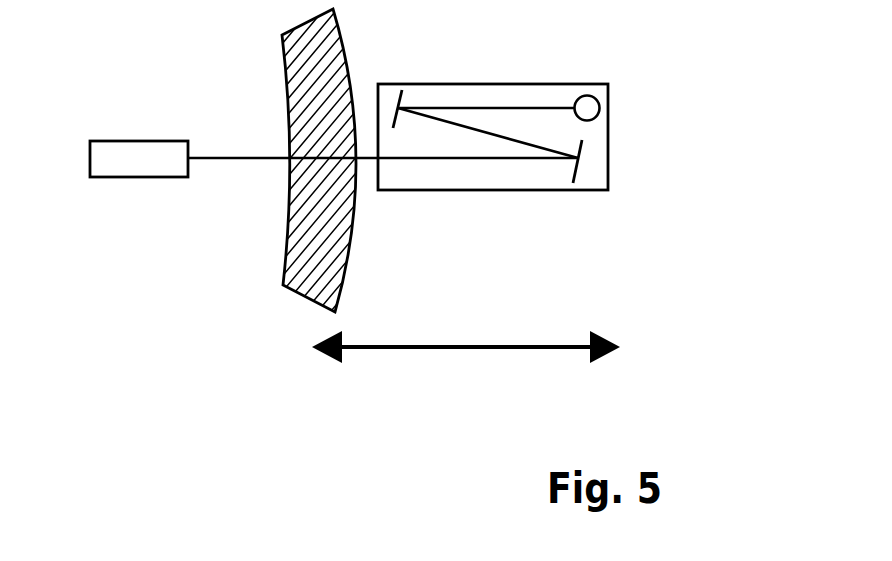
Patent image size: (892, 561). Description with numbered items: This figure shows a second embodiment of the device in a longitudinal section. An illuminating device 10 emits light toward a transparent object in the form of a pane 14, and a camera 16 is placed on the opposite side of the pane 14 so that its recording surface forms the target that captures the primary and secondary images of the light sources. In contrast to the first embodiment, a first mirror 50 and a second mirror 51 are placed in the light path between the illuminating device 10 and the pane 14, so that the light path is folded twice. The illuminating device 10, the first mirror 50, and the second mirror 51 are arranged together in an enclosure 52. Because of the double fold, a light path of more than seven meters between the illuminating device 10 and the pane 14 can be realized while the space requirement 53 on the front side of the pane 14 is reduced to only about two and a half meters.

The illuminating device 10 is at (590, 95).
The pane 14 is at (290, 85).
The camera 16 is at (126, 153).
The first mirror 50 is at (407, 103).
The second mirror 51 is at (577, 173).
The enclosure 52 is at (608, 175).
The space requirement 53 is at (477, 348).